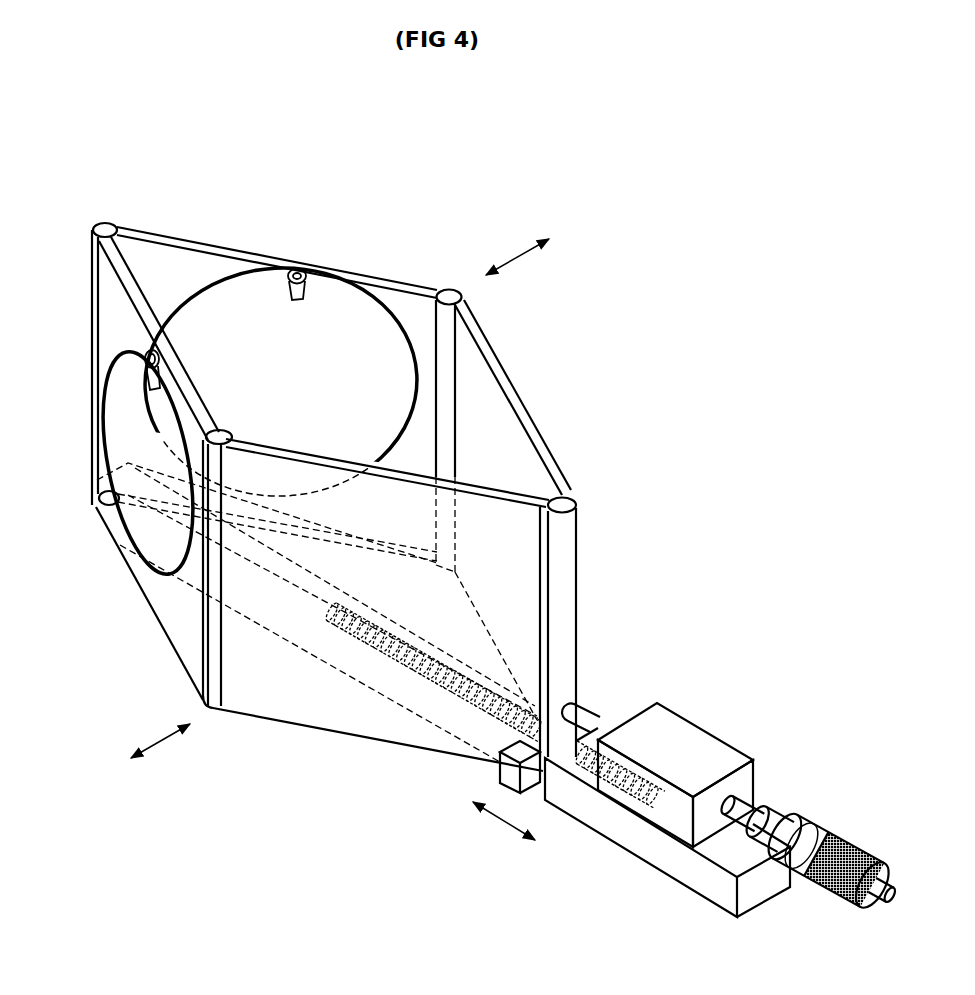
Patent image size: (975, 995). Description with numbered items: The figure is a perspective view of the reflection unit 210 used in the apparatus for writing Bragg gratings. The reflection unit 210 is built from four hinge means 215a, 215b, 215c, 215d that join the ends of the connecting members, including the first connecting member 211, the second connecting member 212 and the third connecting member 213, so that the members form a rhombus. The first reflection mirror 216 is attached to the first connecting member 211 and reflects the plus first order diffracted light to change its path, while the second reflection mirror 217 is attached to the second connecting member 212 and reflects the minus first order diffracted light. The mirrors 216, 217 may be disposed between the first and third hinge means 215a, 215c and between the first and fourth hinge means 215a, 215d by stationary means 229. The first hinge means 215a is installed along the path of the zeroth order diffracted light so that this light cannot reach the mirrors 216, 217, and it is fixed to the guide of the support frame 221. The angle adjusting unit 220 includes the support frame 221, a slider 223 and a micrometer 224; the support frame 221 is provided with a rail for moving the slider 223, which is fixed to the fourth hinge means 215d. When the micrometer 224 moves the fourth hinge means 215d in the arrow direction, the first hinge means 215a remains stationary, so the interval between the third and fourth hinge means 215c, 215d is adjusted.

The reflection unit 210 is at (272, 240).
The first connecting member 211 is at (102, 300).
The second connecting member 212 is at (182, 250).
The third connecting member 213 is at (180, 640).
The first hinge means 215a is at (105, 226).
The second hinge means 215b is at (575, 500).
The third hinge means 215c is at (222, 440).
The fourth hinge means 215d is at (462, 294).
The first reflection mirror 216 is at (117, 405).
The second reflection mirror 217 is at (340, 312).
The angle adjusting unit 220 is at (800, 722).
The support frame 221 is at (677, 872).
The slider 223 is at (683, 738).
The micrometer 224 is at (813, 872).
The stationary means 229 is at (292, 288).